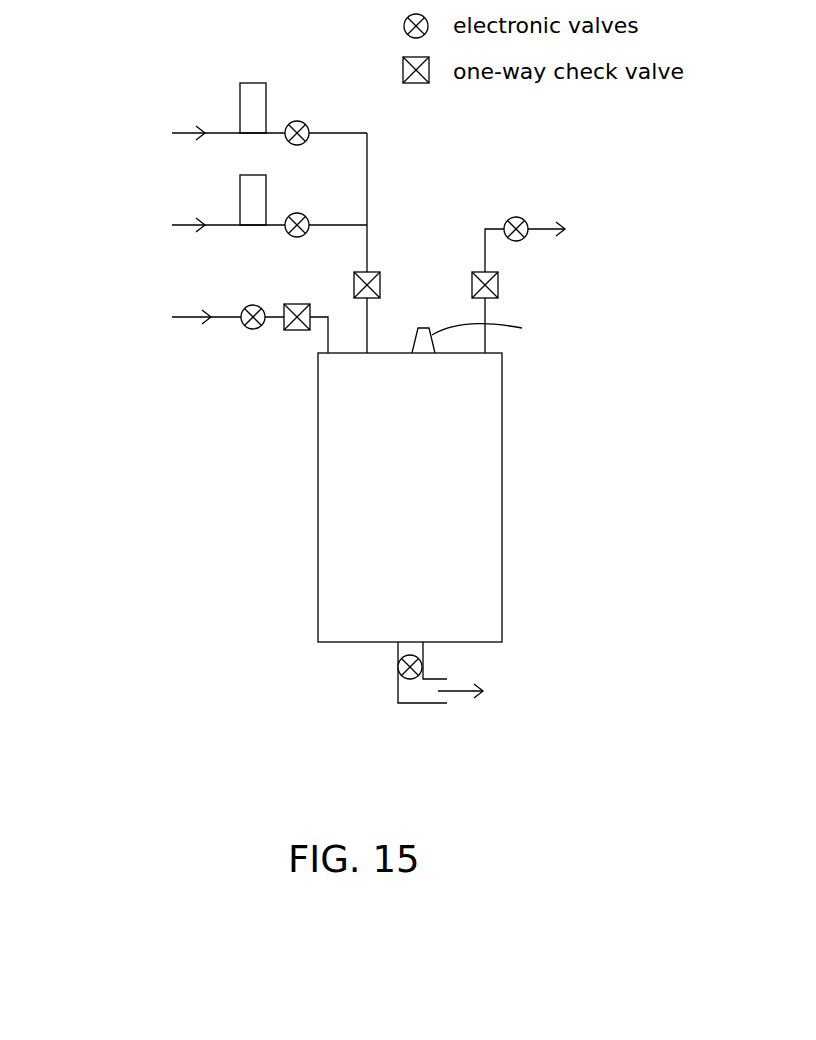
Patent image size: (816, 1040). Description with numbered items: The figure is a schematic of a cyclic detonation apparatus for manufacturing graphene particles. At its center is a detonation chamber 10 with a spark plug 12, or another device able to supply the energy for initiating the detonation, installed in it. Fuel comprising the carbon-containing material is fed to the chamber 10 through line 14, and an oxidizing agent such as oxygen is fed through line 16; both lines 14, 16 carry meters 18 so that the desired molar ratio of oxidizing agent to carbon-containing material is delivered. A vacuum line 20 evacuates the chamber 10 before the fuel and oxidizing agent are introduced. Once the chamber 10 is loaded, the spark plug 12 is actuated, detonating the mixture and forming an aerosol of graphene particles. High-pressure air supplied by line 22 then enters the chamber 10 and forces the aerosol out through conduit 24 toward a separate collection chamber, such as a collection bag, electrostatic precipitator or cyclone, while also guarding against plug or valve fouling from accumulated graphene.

The detonation chamber 10 is at (502, 538).
The spark plug 12 is at (412, 338).
The line 14 is at (218, 133).
The line 16 is at (218, 225).
The meters 18 is at (266, 99).
The vacuum line 20 is at (483, 250).
The line 22 is at (220, 317).
The conduit 24 is at (418, 705).